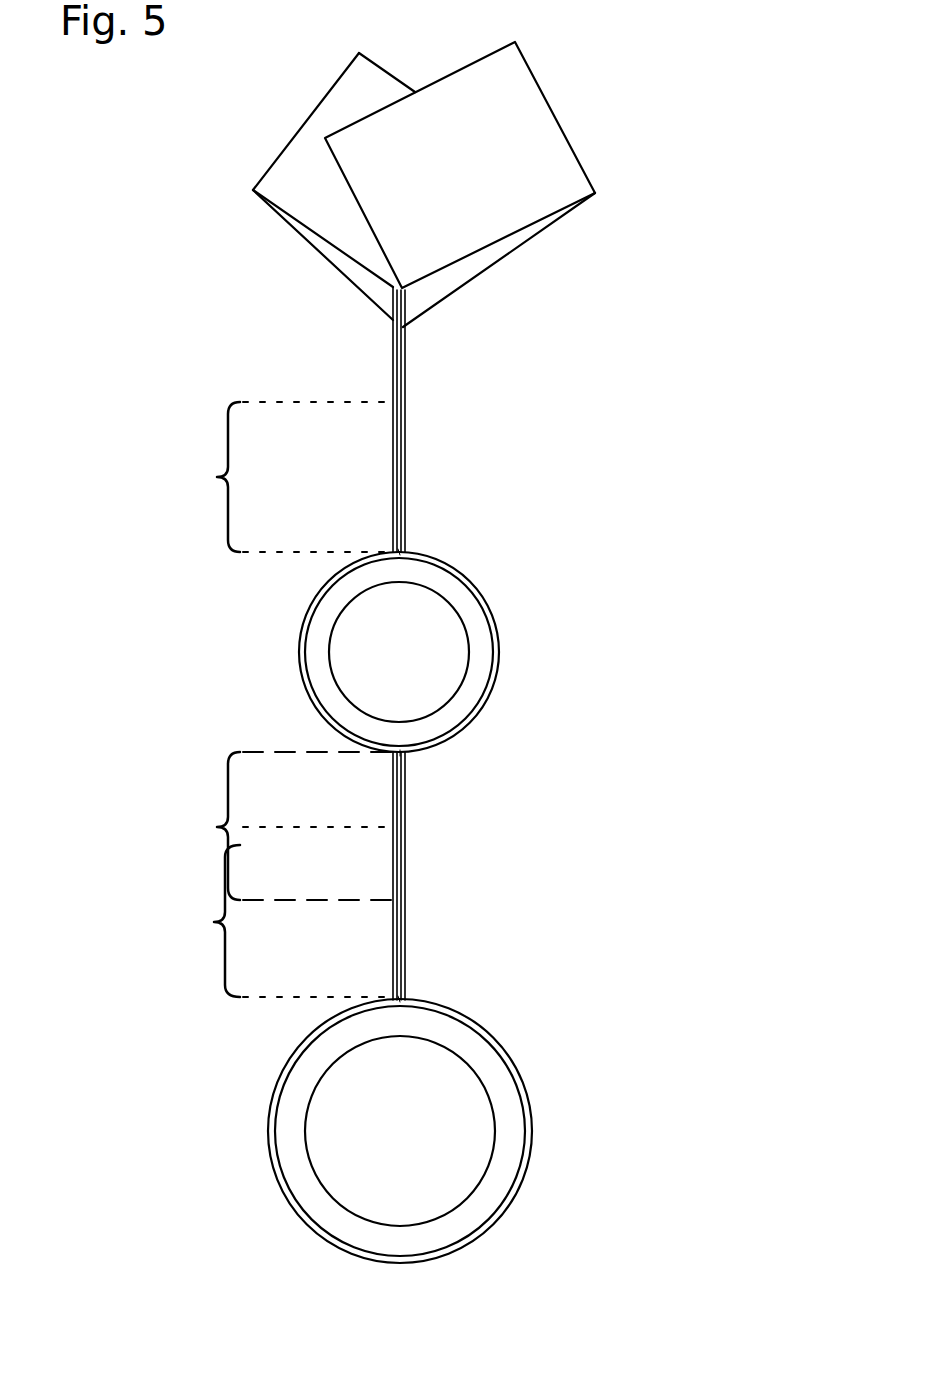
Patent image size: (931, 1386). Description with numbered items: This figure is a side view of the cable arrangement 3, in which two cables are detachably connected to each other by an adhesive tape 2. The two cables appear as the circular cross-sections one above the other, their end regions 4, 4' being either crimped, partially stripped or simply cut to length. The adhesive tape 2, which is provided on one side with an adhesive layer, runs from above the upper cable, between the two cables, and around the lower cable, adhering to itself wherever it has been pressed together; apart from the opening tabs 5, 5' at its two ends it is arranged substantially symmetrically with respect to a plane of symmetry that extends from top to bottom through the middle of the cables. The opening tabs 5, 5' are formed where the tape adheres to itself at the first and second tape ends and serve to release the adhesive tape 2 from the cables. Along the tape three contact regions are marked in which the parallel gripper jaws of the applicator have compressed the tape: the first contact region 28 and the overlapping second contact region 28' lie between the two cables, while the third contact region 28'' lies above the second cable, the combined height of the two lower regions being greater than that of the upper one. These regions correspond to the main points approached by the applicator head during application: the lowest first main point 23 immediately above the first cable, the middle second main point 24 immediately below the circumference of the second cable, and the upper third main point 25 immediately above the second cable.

The adhesive tape 2 is at (393, 362).
The cable arrangement 3 is at (662, 310).
The end region 4 is at (423, 1131).
The end region 4' is at (433, 652).
The opening tab 5 is at (499, 184).
The opening tab 5' is at (286, 186).
The first main point 23 is at (403, 998).
The second main point 24 is at (408, 752).
The third main point 25 is at (403, 552).
The first contact region 28 is at (279, 921).
The second contact region 28' is at (276, 826).
The third contact region 28'' is at (272, 477).